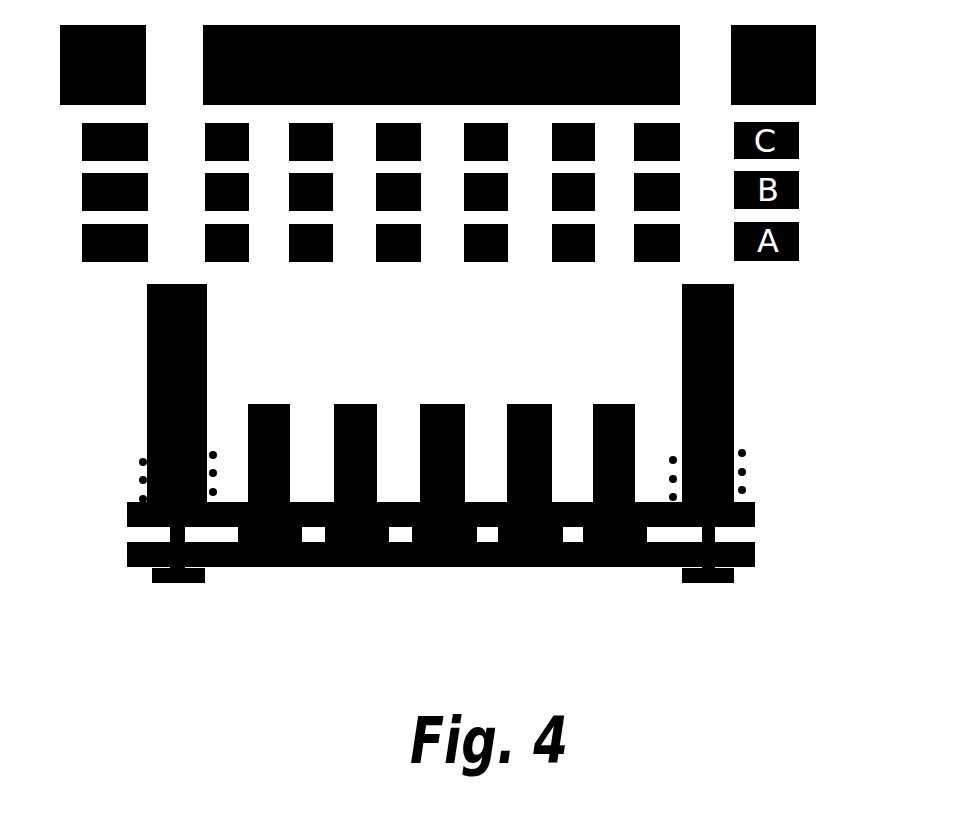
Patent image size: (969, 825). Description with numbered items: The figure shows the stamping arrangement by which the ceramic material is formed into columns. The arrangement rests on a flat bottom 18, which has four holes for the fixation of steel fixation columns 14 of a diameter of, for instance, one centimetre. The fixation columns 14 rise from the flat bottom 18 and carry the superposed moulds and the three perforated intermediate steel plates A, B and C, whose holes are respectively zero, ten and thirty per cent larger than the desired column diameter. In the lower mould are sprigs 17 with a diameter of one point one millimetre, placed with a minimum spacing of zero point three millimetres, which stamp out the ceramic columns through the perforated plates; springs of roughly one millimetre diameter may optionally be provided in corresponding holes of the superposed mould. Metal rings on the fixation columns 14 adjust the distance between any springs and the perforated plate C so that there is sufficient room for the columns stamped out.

The fixation columns 14 is at (147, 377).
The sprigs 17 is at (635, 437).
The flat bottom 18 is at (740, 513).